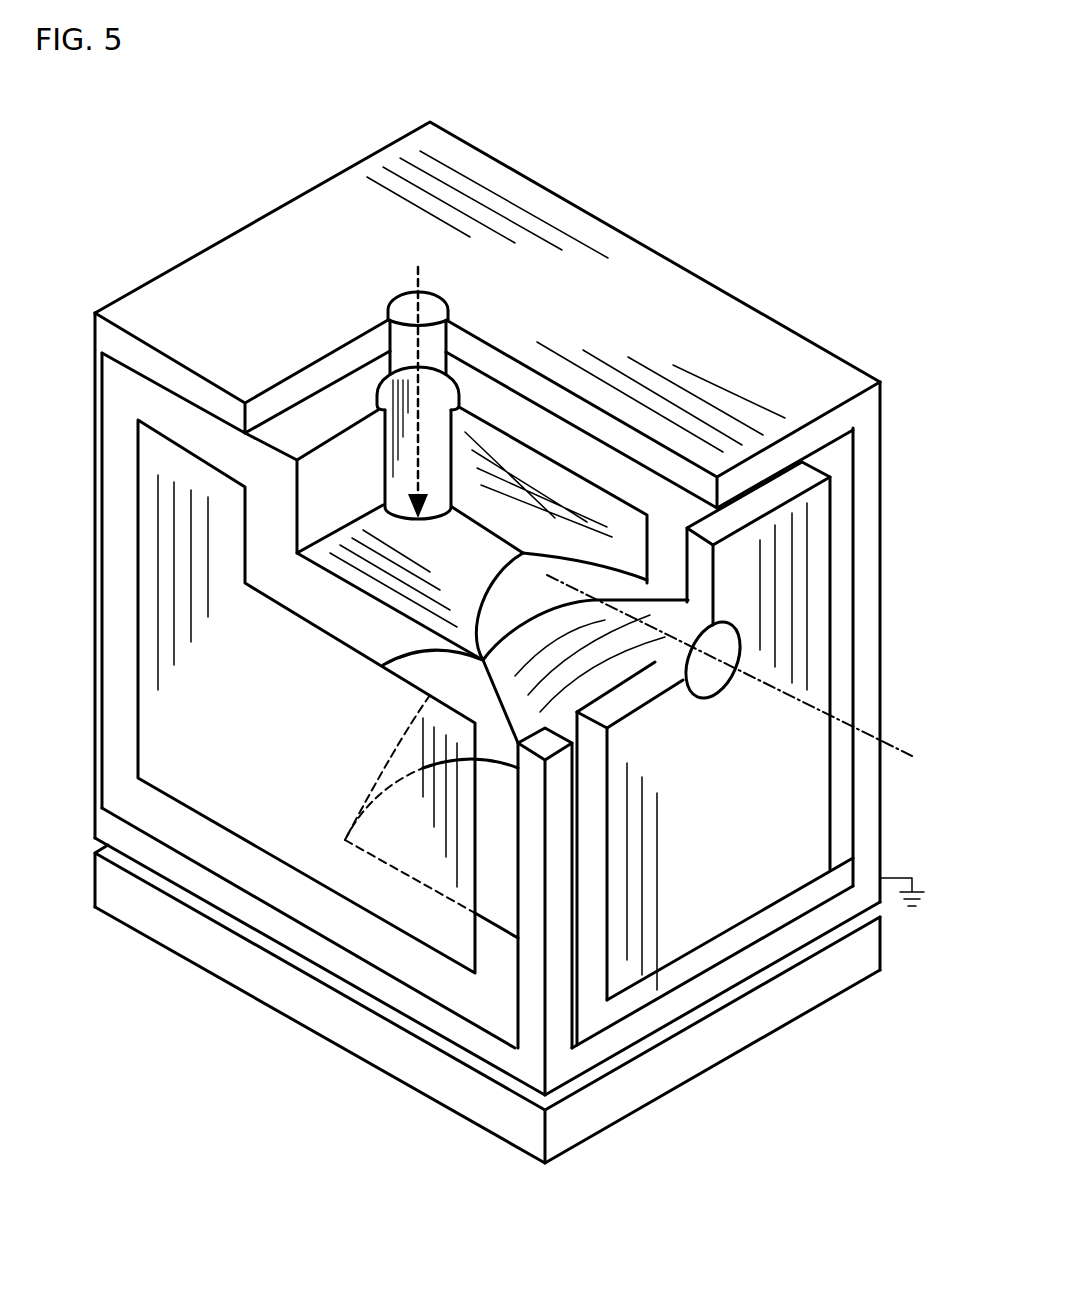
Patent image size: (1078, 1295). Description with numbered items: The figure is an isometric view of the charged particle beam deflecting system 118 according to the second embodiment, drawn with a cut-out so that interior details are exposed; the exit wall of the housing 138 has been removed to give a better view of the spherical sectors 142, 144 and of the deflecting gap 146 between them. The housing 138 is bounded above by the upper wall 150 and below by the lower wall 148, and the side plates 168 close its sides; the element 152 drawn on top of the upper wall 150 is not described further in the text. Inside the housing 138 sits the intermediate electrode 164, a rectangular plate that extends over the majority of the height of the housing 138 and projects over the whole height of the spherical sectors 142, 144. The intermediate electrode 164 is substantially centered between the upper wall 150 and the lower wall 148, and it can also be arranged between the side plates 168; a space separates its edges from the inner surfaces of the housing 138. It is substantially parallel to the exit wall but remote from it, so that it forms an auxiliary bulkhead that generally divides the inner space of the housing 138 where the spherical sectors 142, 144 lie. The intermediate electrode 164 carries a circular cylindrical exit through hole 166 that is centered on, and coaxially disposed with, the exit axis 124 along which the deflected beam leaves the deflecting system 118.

The ion beam deflecting system 118 is at (236, 164).
The housing 138 is at (777, 242).
The upper wall 150 is at (598, 297).
The inlet nozzle 152 is at (392, 311).
The spherical sector 144 is at (487, 567).
The deflecting gap 146 is at (542, 607).
The spherical sector 142 is at (513, 714).
The side plate 168 is at (333, 756).
The intermediate electrode 164 is at (715, 756).
The exit through hole 166 is at (718, 678).
The exit axis 124 is at (905, 756).
The lower wall 148 is at (338, 958).